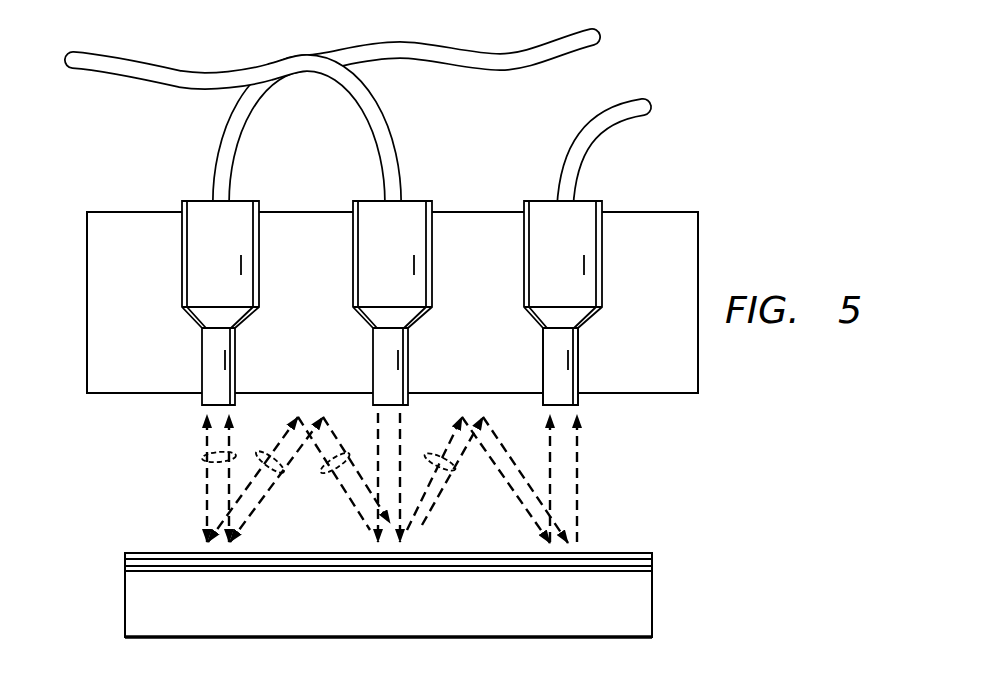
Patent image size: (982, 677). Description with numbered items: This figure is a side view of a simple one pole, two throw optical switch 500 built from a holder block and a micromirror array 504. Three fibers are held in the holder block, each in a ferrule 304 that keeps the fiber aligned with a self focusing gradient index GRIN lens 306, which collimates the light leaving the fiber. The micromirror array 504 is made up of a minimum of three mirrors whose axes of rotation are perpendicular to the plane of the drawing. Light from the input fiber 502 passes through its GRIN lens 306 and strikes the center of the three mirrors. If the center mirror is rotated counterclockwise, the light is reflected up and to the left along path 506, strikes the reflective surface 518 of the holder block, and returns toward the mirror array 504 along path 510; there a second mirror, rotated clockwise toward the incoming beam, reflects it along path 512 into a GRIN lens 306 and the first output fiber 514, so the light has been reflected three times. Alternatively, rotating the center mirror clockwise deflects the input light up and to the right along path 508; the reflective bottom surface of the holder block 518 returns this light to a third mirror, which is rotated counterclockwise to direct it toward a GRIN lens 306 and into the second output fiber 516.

The optical switch 500 is at (690, 41).
The input fiber 502 is at (93, 70).
The first output fiber 514 is at (497, 73).
The second output fiber 516 is at (596, 144).
The ferrule 304 is at (603, 253).
The GRIN lens 306 is at (579, 357).
The reflective surface of the holder block 518 is at (100, 396).
The path 512 is at (201, 456).
The path 510 is at (278, 475).
The path 506 is at (335, 473).
The path 508 is at (452, 472).
The micromirror array 504 is at (653, 592).